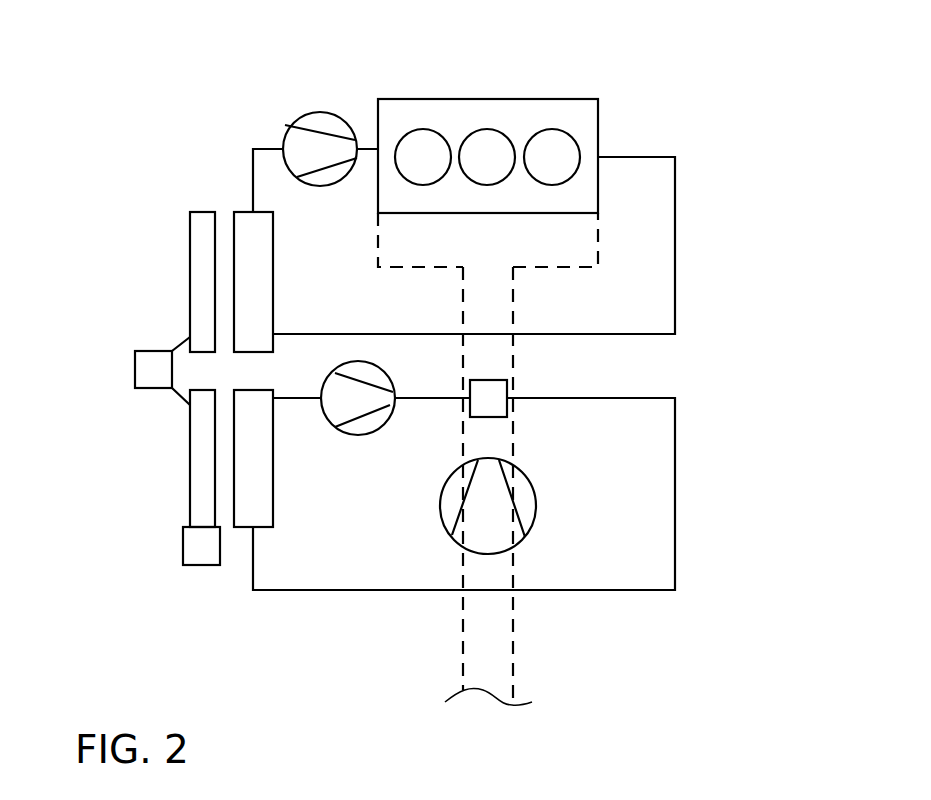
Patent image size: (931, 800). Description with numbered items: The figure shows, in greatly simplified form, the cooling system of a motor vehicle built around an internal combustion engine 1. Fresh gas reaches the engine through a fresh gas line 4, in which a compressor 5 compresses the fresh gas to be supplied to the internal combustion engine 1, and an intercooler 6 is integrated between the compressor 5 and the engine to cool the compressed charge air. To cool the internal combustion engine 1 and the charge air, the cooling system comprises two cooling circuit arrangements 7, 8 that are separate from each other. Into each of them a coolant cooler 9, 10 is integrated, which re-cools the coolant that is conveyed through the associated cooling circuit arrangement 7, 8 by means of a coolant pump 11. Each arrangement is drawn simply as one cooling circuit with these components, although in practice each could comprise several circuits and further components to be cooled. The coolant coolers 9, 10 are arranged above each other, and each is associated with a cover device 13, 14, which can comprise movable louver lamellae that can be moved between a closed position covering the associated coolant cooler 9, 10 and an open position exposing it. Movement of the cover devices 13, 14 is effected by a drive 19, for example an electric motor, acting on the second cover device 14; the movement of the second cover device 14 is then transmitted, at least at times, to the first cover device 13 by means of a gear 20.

The internal combustion engine 1 is at (574, 117).
The fresh gas line 4 is at (532, 651).
The compressor 5 is at (512, 504).
The intercooler 6 is at (495, 393).
The first cooling circuit arrangement 7 is at (732, 147).
The second cooling circuit arrangement 8 is at (693, 409).
The first coolant cooler 9 is at (250, 225).
The second coolant cooler 10 is at (247, 512).
The coolant pump 11 is at (319, 128).
The first cover device 13 is at (198, 269).
The second cover device 14 is at (198, 452).
The drive 19 is at (197, 552).
The gear 20 is at (150, 362).